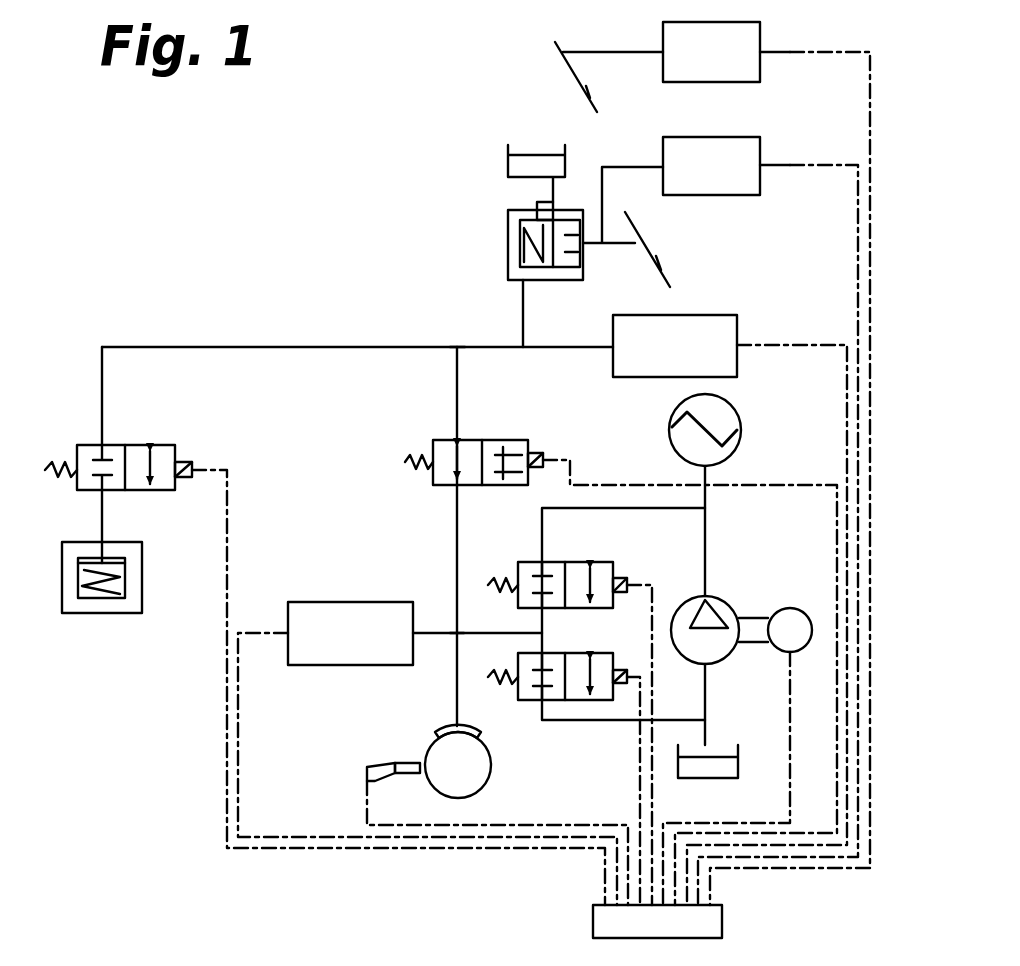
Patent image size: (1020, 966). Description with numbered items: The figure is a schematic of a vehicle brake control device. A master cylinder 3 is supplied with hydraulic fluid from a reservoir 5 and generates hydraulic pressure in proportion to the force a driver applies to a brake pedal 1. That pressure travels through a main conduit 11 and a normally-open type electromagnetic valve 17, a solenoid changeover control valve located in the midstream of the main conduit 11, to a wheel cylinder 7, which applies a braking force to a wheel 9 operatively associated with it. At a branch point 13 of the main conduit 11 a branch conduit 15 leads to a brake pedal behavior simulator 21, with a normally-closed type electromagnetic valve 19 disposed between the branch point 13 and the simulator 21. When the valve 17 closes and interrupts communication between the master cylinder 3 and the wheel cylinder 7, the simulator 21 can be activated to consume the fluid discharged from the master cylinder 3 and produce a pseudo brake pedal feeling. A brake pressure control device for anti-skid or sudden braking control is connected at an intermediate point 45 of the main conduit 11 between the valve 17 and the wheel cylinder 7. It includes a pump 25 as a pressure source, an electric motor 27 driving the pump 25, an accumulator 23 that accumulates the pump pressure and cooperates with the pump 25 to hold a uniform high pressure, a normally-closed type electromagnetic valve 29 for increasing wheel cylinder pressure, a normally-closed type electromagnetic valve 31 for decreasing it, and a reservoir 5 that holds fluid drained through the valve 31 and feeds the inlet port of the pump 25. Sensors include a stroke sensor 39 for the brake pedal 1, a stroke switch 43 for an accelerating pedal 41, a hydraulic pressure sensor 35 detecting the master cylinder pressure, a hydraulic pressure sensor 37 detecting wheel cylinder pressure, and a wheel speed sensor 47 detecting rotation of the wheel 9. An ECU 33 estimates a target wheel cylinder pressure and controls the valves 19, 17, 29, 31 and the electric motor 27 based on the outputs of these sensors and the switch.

The brake pedal 1 is at (643, 267).
The master cylinder 3 is at (508, 227).
The reservoir 5 is at (512, 165).
The wheel cylinder 7 is at (482, 732).
The wheel 9 is at (493, 765).
The main conduit 11 is at (500, 348).
The branch point 13 is at (453, 344).
The branch conduit 15 is at (285, 347).
The normally-open type electromagnetic valve 17 is at (448, 440).
The normally-closed type electromagnetic valve 19 is at (153, 443).
The brake pedal behavior simulator 21 is at (133, 542).
The accumulator 23 is at (763, 403).
The pump 25 is at (735, 605).
The electric motor 27 is at (788, 605).
The normally-closed type electromagnetic valve 29 is at (628, 545).
The normally-closed type electromagnetic valve 31 is at (627, 637).
The ECU 33 is at (723, 915).
The hydraulic pressure sensor 35 is at (763, 312).
The hydraulic pressure sensor 37 is at (343, 602).
The stroke sensor 39 is at (782, 125).
The accelerating pedal 41 is at (567, 68).
The stroke switch 43 is at (673, 83).
The intermediate point 45 is at (452, 638).
The wheel speed sensor 47 is at (367, 775).